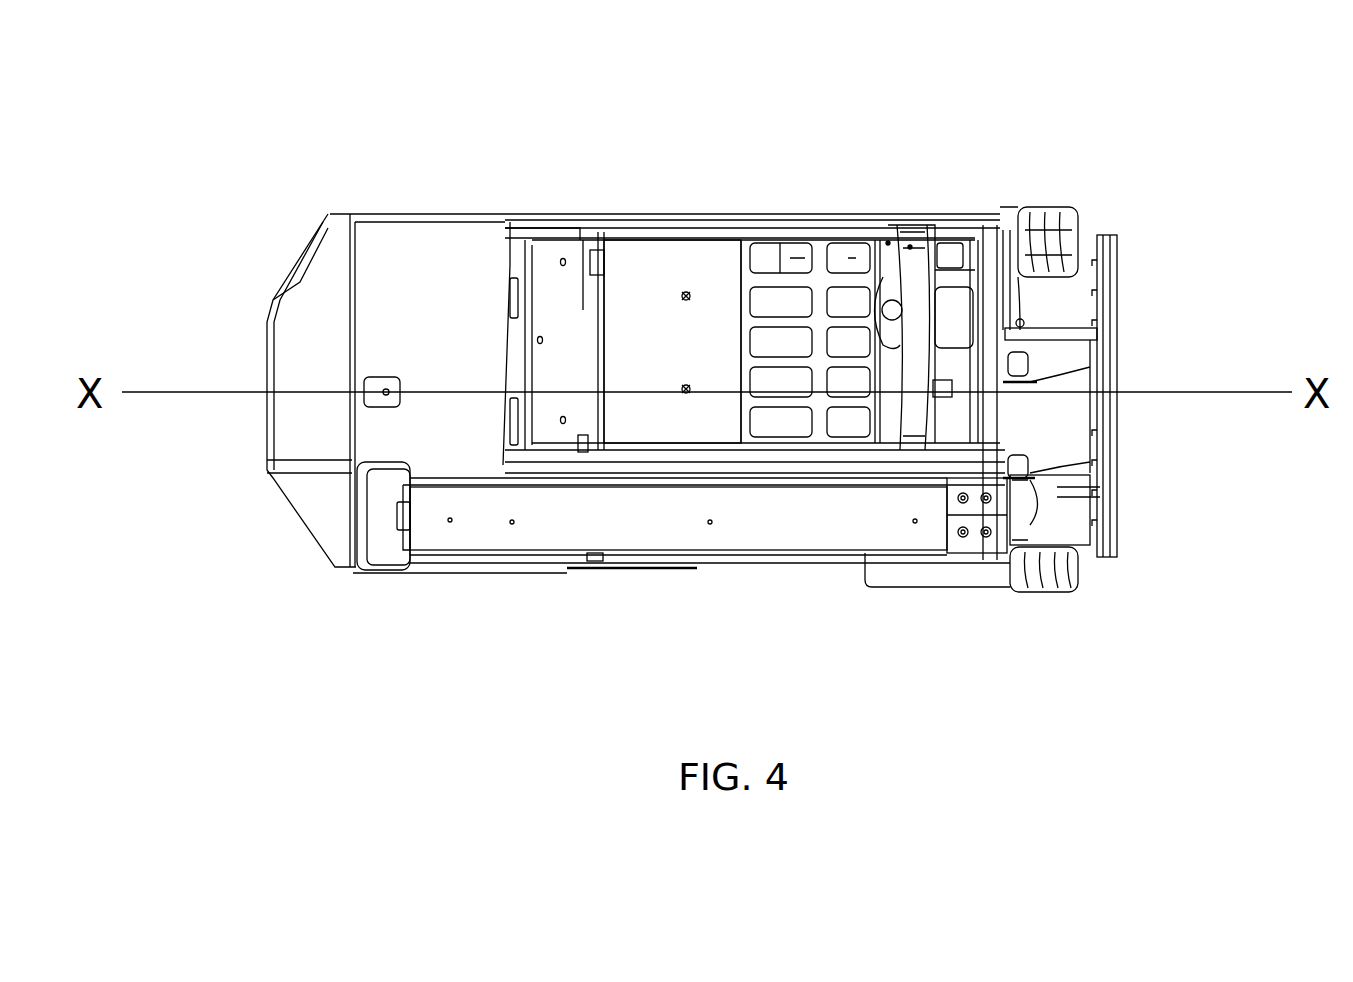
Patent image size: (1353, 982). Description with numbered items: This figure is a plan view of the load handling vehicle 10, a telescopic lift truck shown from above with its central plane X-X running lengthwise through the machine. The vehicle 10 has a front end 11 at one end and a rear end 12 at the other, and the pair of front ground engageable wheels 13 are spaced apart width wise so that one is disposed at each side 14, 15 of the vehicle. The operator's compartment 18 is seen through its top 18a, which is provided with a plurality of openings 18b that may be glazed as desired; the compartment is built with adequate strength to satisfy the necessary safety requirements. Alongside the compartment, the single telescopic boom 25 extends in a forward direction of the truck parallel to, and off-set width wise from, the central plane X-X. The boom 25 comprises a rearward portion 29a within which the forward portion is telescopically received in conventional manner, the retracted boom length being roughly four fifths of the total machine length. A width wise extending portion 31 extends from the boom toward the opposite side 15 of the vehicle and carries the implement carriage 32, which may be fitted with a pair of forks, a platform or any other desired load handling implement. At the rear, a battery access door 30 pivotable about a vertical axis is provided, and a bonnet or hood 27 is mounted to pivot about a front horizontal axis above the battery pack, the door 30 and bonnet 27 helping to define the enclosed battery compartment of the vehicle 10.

The load handling vehicle 10 is at (827, 615).
The front end 11 is at (1190, 366).
The rear end 12 is at (255, 321).
The front ground engageable wheels 13 is at (1075, 222).
The side 14 is at (600, 581).
The side 15 is at (692, 210).
The operator's compartment 18 is at (790, 212).
The top 18a is at (648, 324).
The openings 18b is at (812, 253).
The telescopic boom 25 is at (452, 560).
The bonnet or hood 27 is at (422, 258).
The rearward portion 29a is at (675, 516).
The battery access door 30 is at (312, 282).
The width wise extending portion 31 is at (1065, 355).
The implement carriage 32 is at (1118, 277).